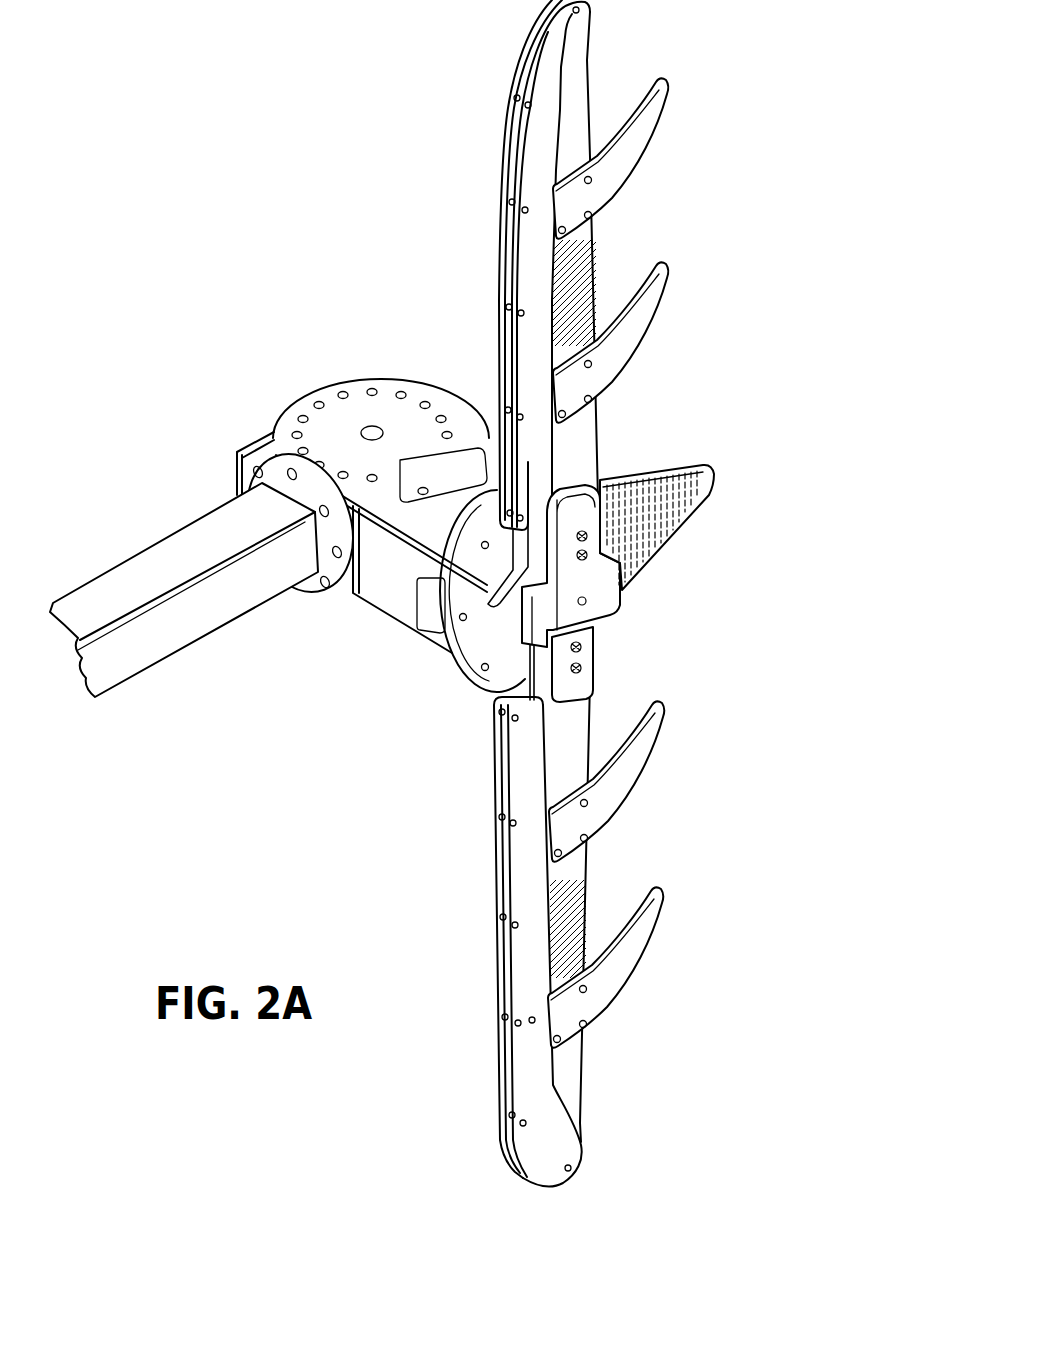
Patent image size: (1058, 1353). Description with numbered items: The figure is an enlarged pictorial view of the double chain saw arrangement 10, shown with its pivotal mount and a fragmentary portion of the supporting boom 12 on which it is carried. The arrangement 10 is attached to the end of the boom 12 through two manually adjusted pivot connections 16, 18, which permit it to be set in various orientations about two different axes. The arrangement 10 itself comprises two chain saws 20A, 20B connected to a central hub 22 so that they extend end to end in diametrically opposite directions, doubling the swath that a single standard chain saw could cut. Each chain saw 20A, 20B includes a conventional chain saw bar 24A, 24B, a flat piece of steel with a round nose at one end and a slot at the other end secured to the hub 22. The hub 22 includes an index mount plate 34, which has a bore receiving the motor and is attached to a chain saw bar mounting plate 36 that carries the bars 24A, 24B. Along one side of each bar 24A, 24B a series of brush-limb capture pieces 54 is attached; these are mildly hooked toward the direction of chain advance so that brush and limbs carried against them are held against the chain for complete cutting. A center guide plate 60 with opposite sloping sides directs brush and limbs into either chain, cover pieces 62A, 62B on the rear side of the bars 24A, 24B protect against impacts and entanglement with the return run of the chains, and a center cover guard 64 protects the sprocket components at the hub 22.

The double chain saw arrangement 10 is at (829, 273).
The boom 12 is at (129, 578).
The pivot connection 16 is at (385, 410).
The pivot connection 18 is at (307, 598).
The chain saw 20A is at (542, 303).
The chain saw 20B is at (526, 933).
The hub 22 is at (675, 582).
The chain saw bar 24A is at (577, 100).
The chain saw bar 24B is at (573, 1062).
The index mount plate 34 is at (468, 667).
The chain saw bar mounting plate 36 is at (493, 610).
The brush-limb capture piece 54 is at (640, 156).
The center guide plate 60 is at (707, 493).
The cover piece 62A is at (500, 135).
The cover piece 62B is at (492, 1027).
The center cover guard 64 is at (587, 606).